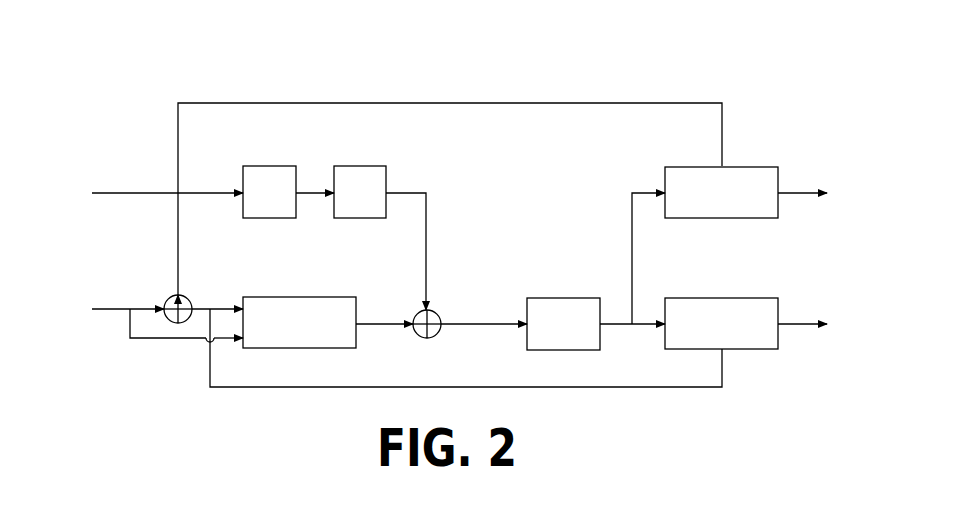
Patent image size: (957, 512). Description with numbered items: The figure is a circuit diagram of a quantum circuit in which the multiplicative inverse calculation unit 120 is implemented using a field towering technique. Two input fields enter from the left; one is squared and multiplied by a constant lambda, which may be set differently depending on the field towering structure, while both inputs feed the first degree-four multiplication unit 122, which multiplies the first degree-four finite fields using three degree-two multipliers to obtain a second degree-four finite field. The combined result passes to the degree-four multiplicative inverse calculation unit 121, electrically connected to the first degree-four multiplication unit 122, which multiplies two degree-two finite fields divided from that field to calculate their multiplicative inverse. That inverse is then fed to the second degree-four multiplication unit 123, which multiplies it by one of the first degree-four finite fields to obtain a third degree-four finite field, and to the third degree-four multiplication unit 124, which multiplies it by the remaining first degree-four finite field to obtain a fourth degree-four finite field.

The multiplicative inverse calculation unit 120 is at (231, 31).
The degree-4 multiplicative inverse calculation unit 121 is at (563, 298).
The first degree-4 multiplication unit 122 is at (298, 297).
The second degree-4 multiplication unit 123 is at (755, 167).
The third degree-4 multiplication unit 124 is at (719, 298).